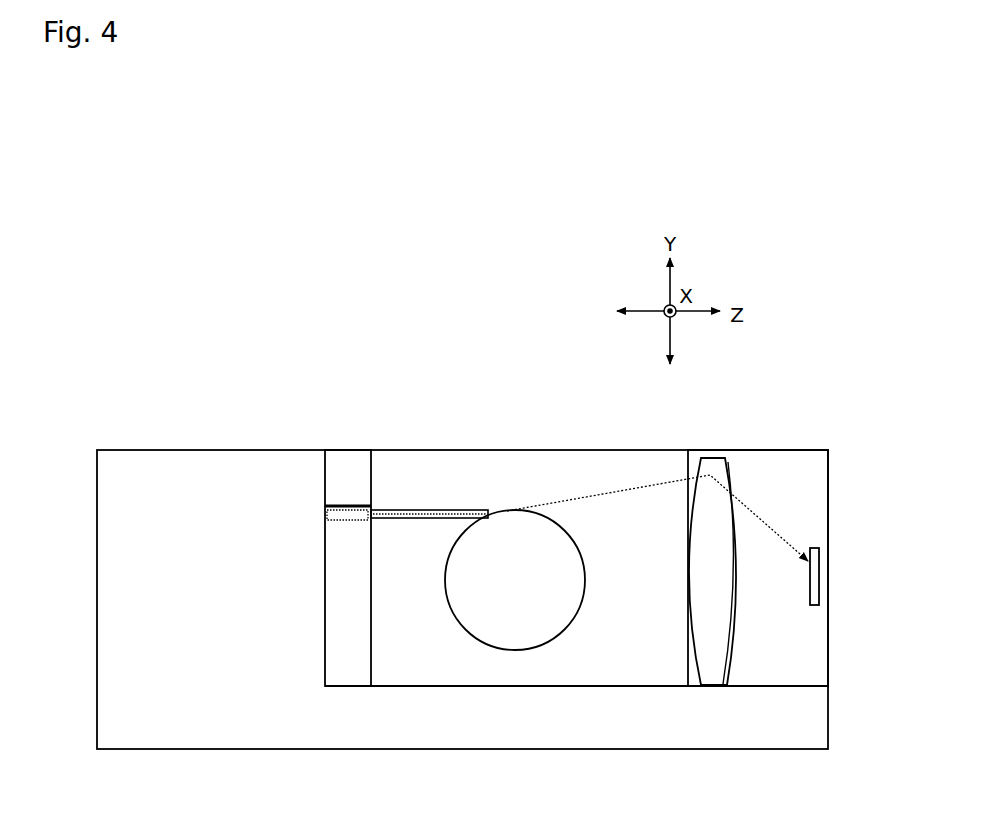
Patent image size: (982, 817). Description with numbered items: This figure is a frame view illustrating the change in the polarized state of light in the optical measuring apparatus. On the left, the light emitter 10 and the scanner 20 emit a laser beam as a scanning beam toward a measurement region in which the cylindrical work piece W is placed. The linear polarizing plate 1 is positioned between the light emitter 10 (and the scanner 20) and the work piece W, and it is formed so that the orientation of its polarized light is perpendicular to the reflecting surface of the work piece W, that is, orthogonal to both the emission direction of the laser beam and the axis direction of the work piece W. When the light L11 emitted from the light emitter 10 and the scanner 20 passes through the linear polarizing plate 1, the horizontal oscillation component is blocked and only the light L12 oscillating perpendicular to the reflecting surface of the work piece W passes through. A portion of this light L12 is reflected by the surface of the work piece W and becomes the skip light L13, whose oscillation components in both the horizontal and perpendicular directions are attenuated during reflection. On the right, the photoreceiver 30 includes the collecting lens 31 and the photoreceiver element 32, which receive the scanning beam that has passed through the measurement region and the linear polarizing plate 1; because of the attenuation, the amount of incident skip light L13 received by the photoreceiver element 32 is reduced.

The light emitter 10 is at (168, 440).
The scanner 20 is at (213, 440).
The linear polarizing plate 1 is at (343, 476).
The light L11 is at (343, 522).
The light L12 is at (425, 508).
The skip light L13 is at (610, 490).
The work piece W is at (547, 618).
The photoreceiver 30 is at (753, 447).
The collecting lens 31 is at (715, 472).
The photoreceiver element 32 is at (817, 583).